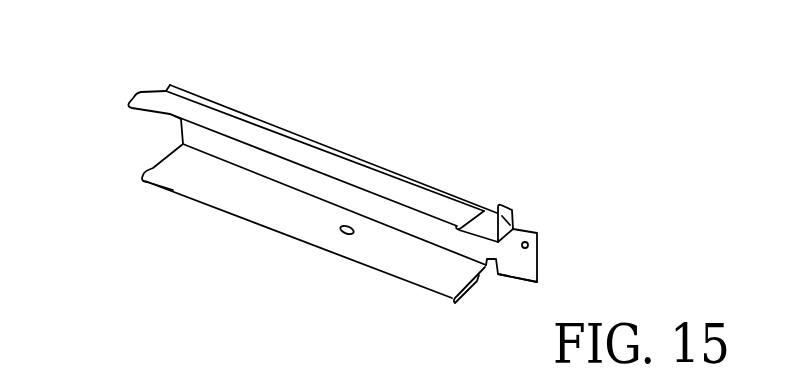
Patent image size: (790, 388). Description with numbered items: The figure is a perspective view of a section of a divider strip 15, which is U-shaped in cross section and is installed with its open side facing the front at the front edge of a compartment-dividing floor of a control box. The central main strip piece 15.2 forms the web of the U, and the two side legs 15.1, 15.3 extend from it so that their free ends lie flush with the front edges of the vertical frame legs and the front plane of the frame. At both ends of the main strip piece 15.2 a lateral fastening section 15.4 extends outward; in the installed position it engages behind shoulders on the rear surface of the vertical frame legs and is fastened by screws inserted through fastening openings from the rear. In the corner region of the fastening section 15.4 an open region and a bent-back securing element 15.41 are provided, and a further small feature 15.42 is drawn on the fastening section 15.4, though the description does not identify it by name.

The divider strip 15 is at (307, 131).
The side leg 15.1 is at (223, 107).
The main strip piece 15.2 is at (171, 113).
The side leg 15.3 is at (162, 181).
The lateral fastening section 15.4 is at (531, 222).
The bent-back securing element 15.41 is at (514, 212).
The hole in end plate 15.42 is at (528, 245).